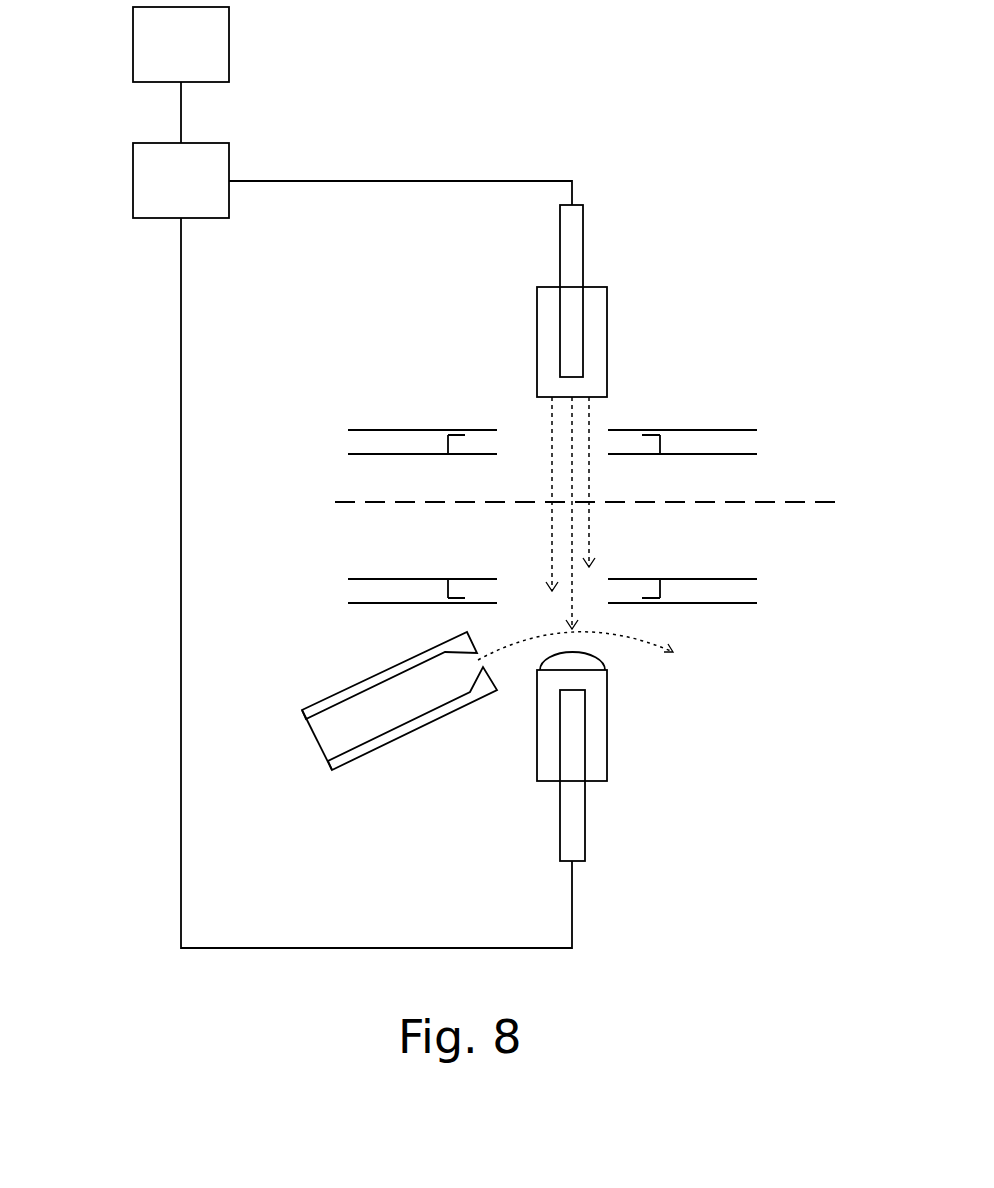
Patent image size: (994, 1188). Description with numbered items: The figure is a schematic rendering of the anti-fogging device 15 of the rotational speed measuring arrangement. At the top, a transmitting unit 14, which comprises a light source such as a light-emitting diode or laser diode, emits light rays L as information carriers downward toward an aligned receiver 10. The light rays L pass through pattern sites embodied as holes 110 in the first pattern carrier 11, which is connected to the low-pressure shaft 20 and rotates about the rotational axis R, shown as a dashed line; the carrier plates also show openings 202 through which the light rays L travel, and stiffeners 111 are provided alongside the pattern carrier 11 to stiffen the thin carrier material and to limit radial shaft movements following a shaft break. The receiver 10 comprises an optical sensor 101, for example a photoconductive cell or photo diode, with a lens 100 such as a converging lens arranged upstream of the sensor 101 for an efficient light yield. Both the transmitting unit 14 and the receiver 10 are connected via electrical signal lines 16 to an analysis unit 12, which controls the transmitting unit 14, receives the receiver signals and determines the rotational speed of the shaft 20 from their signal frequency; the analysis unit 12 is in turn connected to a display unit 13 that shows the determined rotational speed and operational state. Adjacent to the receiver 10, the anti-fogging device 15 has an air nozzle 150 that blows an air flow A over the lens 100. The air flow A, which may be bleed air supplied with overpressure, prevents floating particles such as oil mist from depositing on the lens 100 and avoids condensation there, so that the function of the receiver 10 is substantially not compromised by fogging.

The receiver 10 is at (608, 770).
The first pattern carrier 11 is at (748, 454).
The analysis unit 12 is at (133, 180).
The display unit 13 is at (133, 35).
The transmitting unit 14 is at (583, 352).
The anti-fogging device 15 is at (399, 747).
The electrical signal line 16 is at (361, 181).
The low-pressure shaft 20 is at (744, 430).
The lens 100 is at (593, 667).
The optical sensor 101 is at (597, 740).
The hole 110 is at (608, 579).
The stiffener 111 is at (448, 430).
The air nozzle 150 is at (368, 718).
The opening 202 is at (608, 430).
The light rays L is at (572, 455).
The rotational axis R is at (813, 502).
The air flow A is at (653, 640).